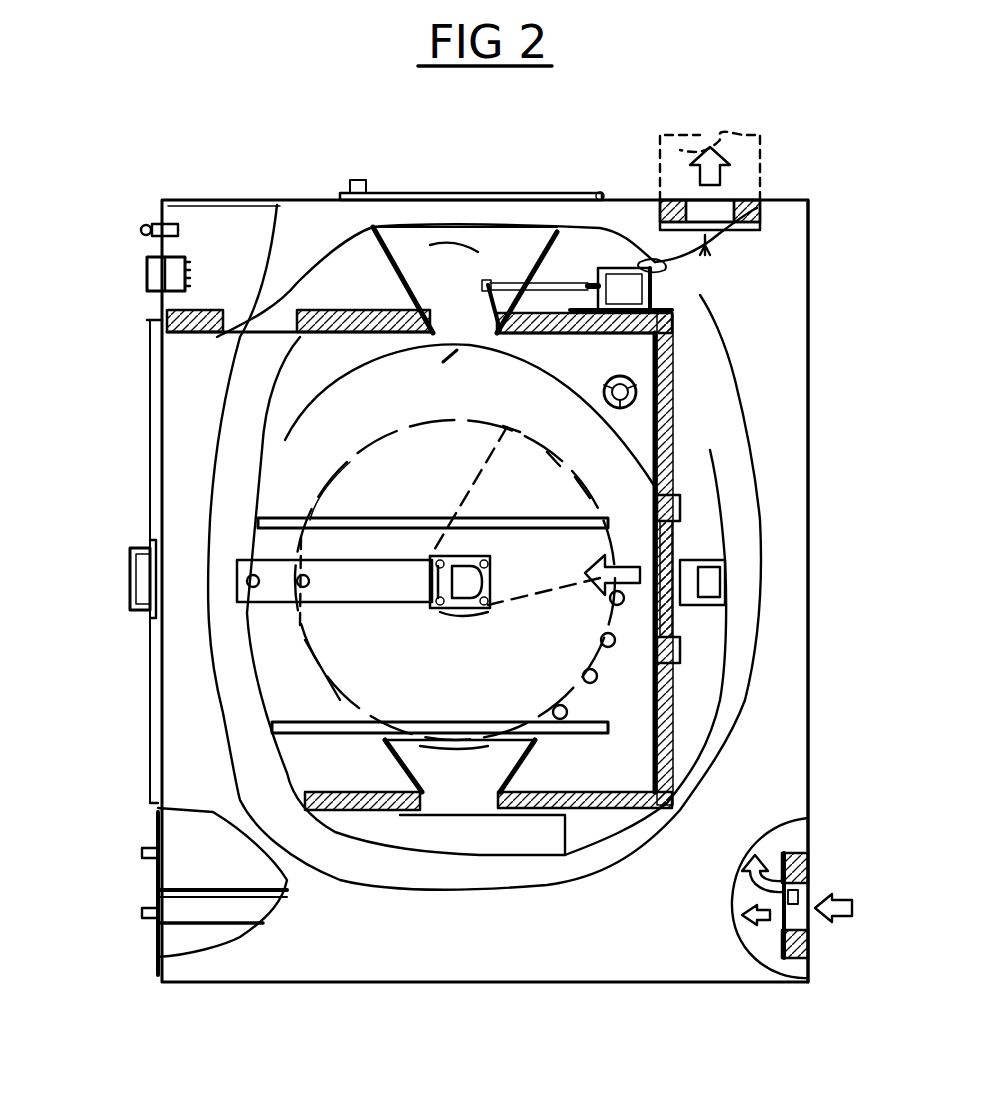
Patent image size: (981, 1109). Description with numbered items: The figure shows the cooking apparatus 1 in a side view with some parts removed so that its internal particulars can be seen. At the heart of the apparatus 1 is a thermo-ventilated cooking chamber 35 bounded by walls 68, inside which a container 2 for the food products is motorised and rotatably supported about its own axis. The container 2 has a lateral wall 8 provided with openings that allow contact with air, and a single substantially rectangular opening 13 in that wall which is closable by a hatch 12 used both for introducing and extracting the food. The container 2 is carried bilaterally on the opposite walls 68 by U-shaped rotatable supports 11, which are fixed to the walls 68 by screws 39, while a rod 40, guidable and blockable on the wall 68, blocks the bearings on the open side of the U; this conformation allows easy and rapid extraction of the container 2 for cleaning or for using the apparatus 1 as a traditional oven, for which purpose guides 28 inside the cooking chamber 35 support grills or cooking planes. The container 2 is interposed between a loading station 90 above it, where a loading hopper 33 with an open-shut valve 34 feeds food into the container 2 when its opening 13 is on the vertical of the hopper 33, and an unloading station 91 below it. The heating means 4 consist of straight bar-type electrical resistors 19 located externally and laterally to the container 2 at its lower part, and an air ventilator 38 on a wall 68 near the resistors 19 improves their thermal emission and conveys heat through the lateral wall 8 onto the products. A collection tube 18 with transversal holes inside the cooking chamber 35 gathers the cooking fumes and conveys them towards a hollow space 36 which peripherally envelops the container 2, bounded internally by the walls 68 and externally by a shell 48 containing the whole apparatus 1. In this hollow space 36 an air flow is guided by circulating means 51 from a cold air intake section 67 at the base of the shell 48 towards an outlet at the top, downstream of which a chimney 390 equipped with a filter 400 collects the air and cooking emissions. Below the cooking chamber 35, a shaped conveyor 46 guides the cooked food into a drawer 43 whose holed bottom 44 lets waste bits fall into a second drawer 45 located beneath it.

The apparatus 1 is at (126, 627).
The container 2 is at (602, 663).
The heating means 4 is at (548, 676).
The lateral wall 8 is at (128, 580).
The rotatable supports 11 is at (585, 550).
The hatch 12 is at (490, 563).
The opening 13 is at (383, 482).
The collection tube 18 is at (637, 386).
The electrical resistors 19 is at (633, 640).
The guides 28 is at (383, 517).
The loading hopper 33 is at (410, 250).
The open-shut valve 34 is at (457, 350).
The cooking chamber 35 is at (293, 446).
The hollow space 36 is at (184, 356).
The air ventilator 38 is at (682, 512).
The screws 39 is at (432, 556).
The rod 40 is at (337, 572).
The drawer 43 is at (183, 832).
The holed bottom 44 is at (207, 888).
The second drawer 45 is at (212, 912).
The shaped conveyor 46 is at (470, 786).
The shell 48 is at (812, 640).
The circulating means 51 is at (843, 893).
The cold air intake section 67 is at (778, 930).
The walls 68 is at (690, 328).
The loading station 90 is at (488, 262).
The unloading station 91 is at (442, 790).
The chimney 390 is at (700, 122).
The filter 400 is at (742, 200).